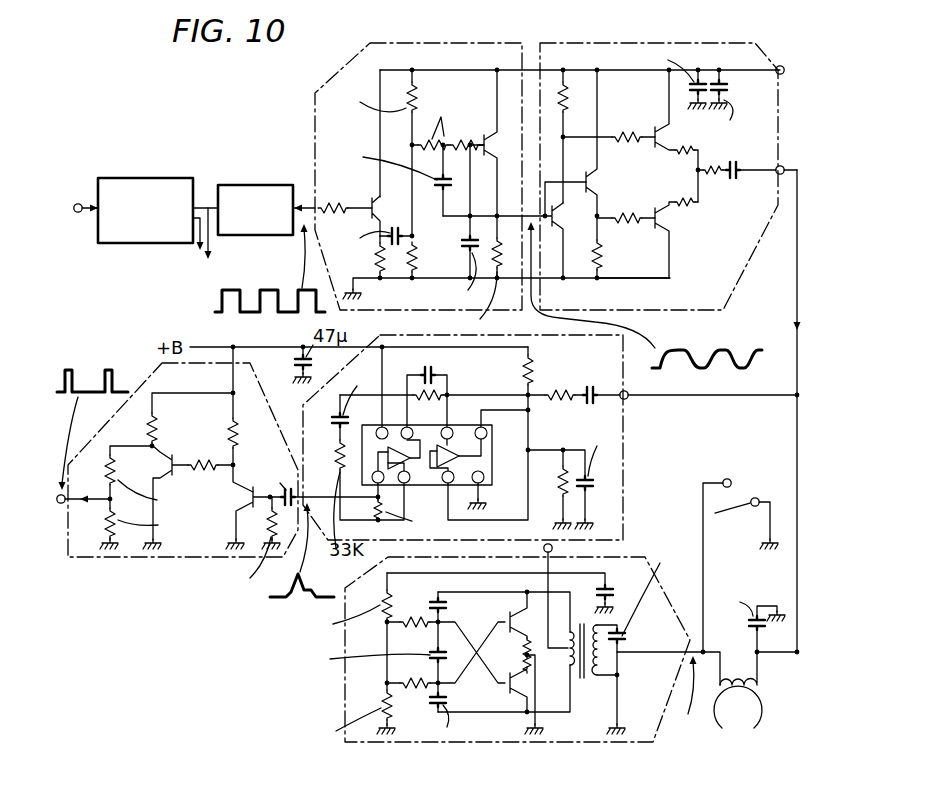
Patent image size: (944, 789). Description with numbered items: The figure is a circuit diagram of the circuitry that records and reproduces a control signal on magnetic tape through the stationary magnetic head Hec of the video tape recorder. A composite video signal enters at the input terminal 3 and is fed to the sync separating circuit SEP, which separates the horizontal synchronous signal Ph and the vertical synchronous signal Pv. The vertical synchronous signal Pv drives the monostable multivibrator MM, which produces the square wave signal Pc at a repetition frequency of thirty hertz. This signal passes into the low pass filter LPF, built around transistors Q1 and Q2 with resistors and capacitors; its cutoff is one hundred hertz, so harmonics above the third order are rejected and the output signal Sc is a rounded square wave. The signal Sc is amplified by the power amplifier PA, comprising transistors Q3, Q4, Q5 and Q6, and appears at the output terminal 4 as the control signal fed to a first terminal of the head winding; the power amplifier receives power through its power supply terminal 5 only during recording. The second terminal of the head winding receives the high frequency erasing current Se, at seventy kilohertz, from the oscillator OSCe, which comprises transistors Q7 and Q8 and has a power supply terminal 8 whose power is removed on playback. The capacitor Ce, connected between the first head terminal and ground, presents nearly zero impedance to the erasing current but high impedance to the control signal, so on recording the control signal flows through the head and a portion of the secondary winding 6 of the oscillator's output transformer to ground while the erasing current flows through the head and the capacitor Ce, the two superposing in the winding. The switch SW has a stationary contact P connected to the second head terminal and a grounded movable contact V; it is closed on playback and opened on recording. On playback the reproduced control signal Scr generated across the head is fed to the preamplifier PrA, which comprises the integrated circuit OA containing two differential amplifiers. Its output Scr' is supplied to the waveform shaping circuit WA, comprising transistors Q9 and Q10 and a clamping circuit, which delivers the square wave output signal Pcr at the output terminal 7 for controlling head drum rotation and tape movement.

The input terminal 3 is at (78, 212).
The output terminal 4 is at (784, 166).
The power supply terminal 5 is at (780, 66).
The secondary winding 6 is at (597, 679).
The output terminal 7 is at (61, 503).
The power supply terminal 8 is at (544, 548).
The sync separating circuit SEP is at (137, 178).
The monostable multivibrator MM is at (247, 185).
The low pass filter LPF is at (405, 43).
The power amplifier PA is at (610, 43).
The waveform shaping circuit WA is at (98, 557).
The preamplifier PrA is at (626, 425).
The integrated circuit OA is at (492, 462).
The oscillator OSCe is at (345, 665).
The switch SW is at (740, 542).
The stationary contact P is at (717, 556).
The movable contact V is at (745, 508).
The capacitor Ce is at (752, 628).
The stationary magnetic head Hec is at (752, 707).
The erasing current Se is at (685, 696).
The control signal Sc is at (678, 350).
The reproduced control signal Scr is at (708, 413).
The preamplifier output signal Scr' is at (292, 559).
The square wave signal Pc is at (215, 303).
The square wave output signal Pcr is at (92, 414).
The horizontal synchronous signal Ph is at (202, 247).
The vertical synchronous signal Pv is at (212, 248).
The transistor Q1 is at (389, 206).
The transistor Q2 is at (495, 142).
The transistor Q3 is at (566, 241).
The transistor Q4 is at (590, 178).
The transistor Q5 is at (664, 142).
The transistor Q6 is at (664, 220).
The transistor Q7 is at (530, 615).
The transistor Q8 is at (509, 692).
The transistor Q9 is at (242, 517).
The transistor Q10 is at (170, 470).